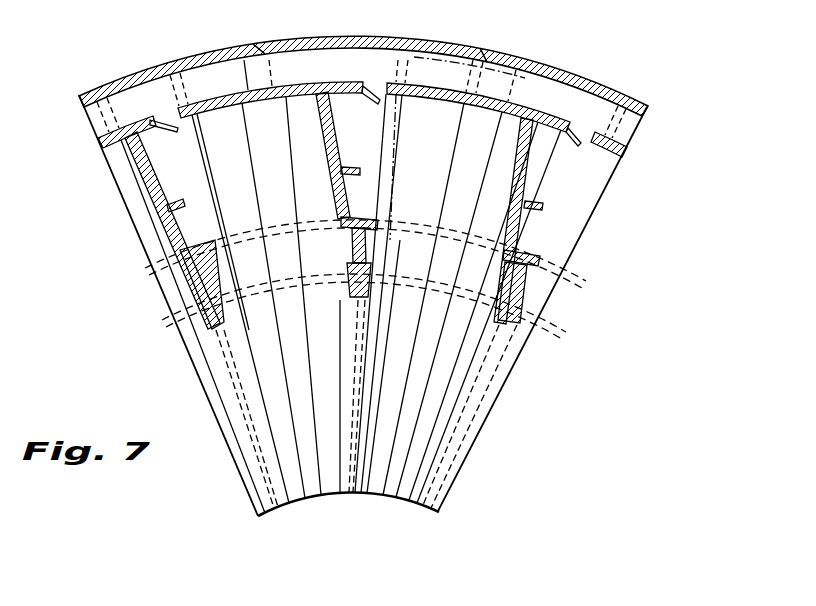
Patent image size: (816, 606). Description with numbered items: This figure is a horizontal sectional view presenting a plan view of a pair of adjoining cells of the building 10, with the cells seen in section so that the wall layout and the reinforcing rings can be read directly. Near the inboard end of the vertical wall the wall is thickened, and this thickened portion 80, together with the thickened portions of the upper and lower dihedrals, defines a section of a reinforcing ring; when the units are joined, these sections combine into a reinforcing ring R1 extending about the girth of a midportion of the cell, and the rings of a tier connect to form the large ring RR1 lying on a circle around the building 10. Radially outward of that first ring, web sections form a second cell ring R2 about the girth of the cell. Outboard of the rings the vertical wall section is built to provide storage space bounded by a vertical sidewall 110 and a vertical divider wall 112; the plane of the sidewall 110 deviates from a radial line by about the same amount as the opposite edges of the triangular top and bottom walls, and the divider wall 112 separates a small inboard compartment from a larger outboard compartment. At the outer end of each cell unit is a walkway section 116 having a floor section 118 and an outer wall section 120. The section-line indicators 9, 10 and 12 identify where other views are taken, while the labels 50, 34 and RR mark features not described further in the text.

The annular support assembly 50 is at (608, 70).
The walkway section 116 is at (150, 66).
The floor section 118 is at (127, 90).
The outer wall section 120 is at (246, 46).
The vertical sidewall 110 is at (123, 194).
The vertical divider wall 112 is at (178, 198).
The thickened portion of the vertical wall 80 is at (348, 293).
The inner hub ring 34 is at (395, 522).
The reinforcing ring R1 is at (228, 296).
The second cell ring R2 is at (222, 238).
The radius RR reference circle RR is at (136, 270).
The large ring RR1 is at (166, 338).
The section line 9- 9 is at (351, 314).
The building structure 10 is at (401, 478).
The section line 12- 12 is at (452, 161).